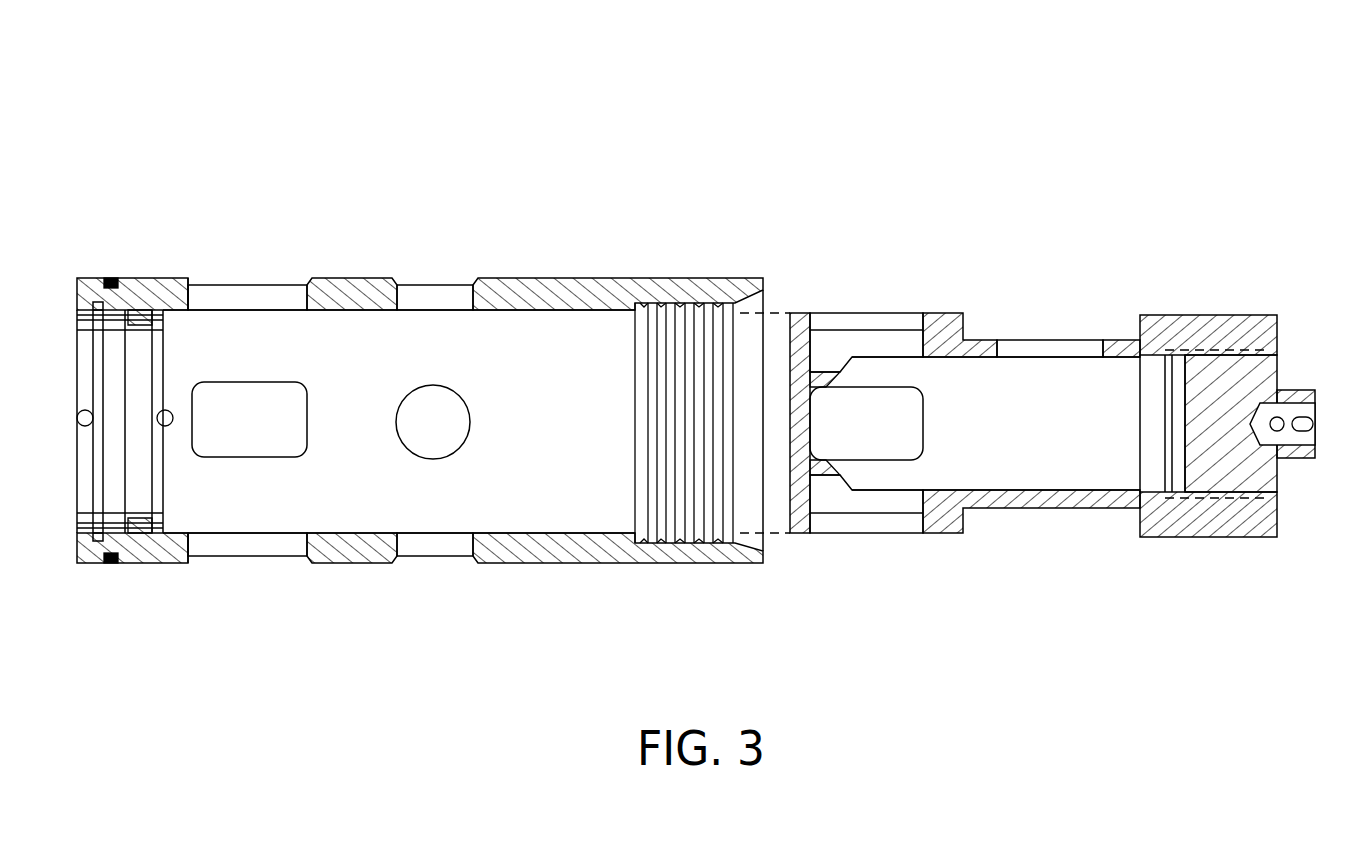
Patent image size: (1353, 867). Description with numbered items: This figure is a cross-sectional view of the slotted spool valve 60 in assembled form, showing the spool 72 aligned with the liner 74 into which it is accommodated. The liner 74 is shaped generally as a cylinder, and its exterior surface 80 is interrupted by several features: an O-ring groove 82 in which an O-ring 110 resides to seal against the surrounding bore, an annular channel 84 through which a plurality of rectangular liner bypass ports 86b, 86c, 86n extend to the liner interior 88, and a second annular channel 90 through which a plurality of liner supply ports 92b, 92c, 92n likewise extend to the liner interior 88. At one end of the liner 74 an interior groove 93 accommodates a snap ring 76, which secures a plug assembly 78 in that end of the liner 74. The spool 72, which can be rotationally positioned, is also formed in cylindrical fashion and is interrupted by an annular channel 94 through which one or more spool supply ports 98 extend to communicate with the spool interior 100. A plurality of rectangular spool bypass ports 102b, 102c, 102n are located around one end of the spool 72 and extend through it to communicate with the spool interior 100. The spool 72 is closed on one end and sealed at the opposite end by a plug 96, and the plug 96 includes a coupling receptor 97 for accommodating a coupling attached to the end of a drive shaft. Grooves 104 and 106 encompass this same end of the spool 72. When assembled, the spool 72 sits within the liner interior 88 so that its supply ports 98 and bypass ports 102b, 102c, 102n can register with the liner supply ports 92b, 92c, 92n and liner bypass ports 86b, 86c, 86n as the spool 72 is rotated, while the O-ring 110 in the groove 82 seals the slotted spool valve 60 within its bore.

The slotted spool valve 60 is at (1318, 78).
The spool 72 is at (1315, 148).
The liner 74 is at (763, 148).
The snap ring 76 is at (95, 480).
The plug assembly 78 is at (133, 380).
The exterior surface 80 is at (620, 565).
The O-ring groove 82 is at (146, 545).
The annular channel 84 is at (195, 277).
The rectangular liner bypass port 86n is at (228, 293).
The rectangular liner bypass port 86b is at (223, 550).
The rectangular liner bypass port 86c is at (232, 400).
The liner interior 88 is at (366, 430).
The annular channel 90 is at (395, 278).
The liner supply port 92n is at (440, 290).
The liner supply port 92b is at (432, 548).
The liner supply port 92c is at (428, 395).
The interior groove 93 is at (108, 553).
The annular channel 94 is at (985, 335).
The plug 96 is at (1262, 375).
The coupling receptor 97 is at (1283, 460).
The spool supply port 98 is at (1040, 345).
The spool interior 100 is at (1074, 430).
The rectangular spool bypass port 102n is at (872, 320).
The rectangular spool bypass port 102b is at (873, 525).
The rectangular spool bypass port 102c is at (908, 420).
The groove 104 is at (1168, 315).
The groove 106 is at (1210, 315).
The O-ring 110 is at (110, 277).